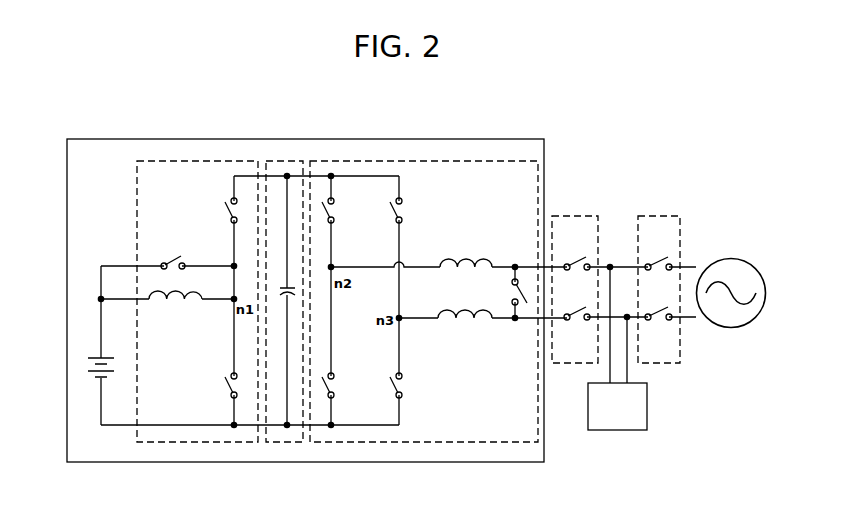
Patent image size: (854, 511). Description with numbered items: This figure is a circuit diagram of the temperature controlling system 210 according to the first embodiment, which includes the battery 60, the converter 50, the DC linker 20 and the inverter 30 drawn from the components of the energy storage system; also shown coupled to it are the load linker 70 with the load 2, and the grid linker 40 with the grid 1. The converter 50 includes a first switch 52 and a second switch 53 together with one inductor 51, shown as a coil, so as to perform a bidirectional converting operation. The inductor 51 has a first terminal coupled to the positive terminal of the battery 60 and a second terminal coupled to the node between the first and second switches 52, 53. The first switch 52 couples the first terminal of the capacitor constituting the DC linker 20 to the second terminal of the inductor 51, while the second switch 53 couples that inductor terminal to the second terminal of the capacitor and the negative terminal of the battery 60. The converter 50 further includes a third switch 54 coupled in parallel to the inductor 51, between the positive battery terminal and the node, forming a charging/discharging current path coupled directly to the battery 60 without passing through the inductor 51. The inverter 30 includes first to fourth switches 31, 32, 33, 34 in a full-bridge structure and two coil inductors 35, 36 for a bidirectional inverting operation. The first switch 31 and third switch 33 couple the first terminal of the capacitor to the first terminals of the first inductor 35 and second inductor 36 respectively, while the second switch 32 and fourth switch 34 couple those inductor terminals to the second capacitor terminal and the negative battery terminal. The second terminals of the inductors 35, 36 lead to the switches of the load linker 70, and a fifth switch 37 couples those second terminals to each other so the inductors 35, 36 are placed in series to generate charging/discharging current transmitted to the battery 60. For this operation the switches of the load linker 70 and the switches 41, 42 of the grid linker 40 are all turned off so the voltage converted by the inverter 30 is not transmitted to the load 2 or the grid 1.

The grid 1 is at (731, 258).
The load 2 is at (618, 431).
The DC linker 20 is at (284, 160).
The inverter 30 is at (430, 160).
The first switch 31 is at (337, 212).
The second switch 32 is at (338, 387).
The third switch 33 is at (405, 212).
The fourth switch 34 is at (406, 387).
The first inductor 35 is at (458, 258).
The second inductor 36 is at (463, 322).
The fifth switch 37 is at (507, 291).
The grid linker 40 is at (657, 216).
The first switch of grid linker 41 is at (657, 259).
The second switch of grid linker 42 is at (657, 325).
The converter 50 is at (200, 160).
The inductor 51 is at (175, 305).
The first switch 52 is at (226, 212).
The second switch 53 is at (224, 390).
The third switch 54 is at (177, 258).
The battery 60 is at (89, 367).
The load linker 70 is at (576, 216).
The temperature controlling system 210 is at (346, 139).